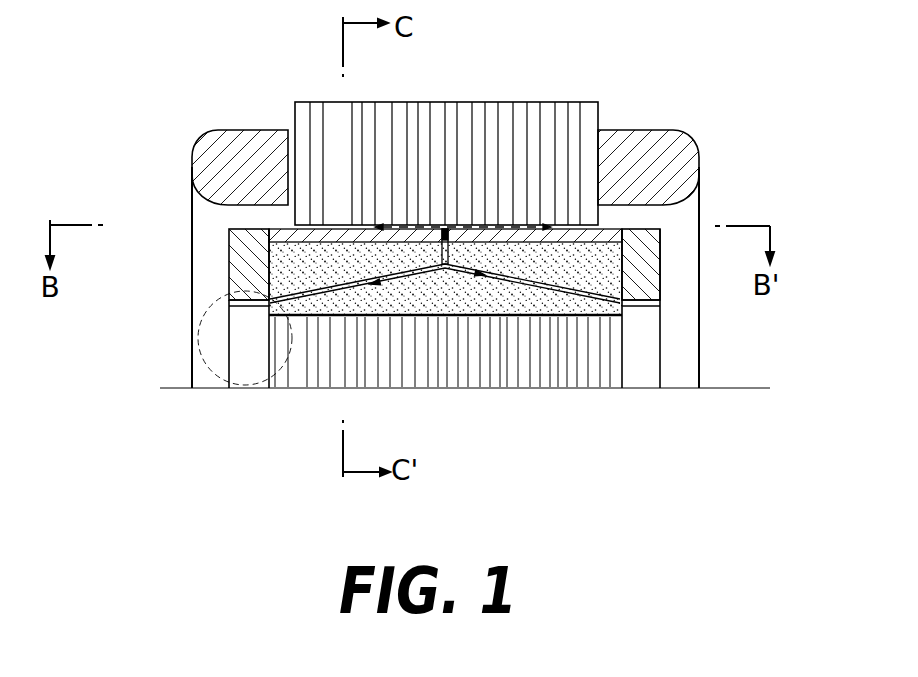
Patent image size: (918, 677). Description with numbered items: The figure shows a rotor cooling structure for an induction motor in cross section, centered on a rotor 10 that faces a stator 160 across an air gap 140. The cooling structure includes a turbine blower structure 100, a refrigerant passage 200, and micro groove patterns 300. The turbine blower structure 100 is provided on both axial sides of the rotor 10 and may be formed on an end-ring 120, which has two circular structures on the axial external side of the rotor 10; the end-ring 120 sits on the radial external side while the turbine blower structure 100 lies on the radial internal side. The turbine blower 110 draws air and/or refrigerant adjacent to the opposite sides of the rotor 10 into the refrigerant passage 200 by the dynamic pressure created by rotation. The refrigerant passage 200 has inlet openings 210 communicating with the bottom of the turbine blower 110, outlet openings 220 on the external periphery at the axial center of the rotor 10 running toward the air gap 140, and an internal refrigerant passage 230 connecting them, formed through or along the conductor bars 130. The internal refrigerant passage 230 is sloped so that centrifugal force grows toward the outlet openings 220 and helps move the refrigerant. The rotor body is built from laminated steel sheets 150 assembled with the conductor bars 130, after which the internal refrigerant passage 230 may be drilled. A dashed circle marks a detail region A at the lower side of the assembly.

The rotor 10 is at (667, 343).
The turbine blower structure 100 is at (128, 257).
The turbine blower 110 is at (233, 320).
The end-ring 120 is at (232, 272).
The conductor bars 130 is at (380, 307).
The air gap 140 is at (298, 227).
The laminated steel sheets 150 is at (312, 383).
The stator 160 is at (521, 93).
The refrigerant passage 200 is at (444, 368).
The refrigerant passage inlet openings 210 is at (420, 430).
The refrigerant passage outlet openings 220 is at (445, 268).
The internal refrigerant passage 230 is at (555, 296).
The micro groove patterns 300 is at (607, 225).
The detail region A is at (200, 356).